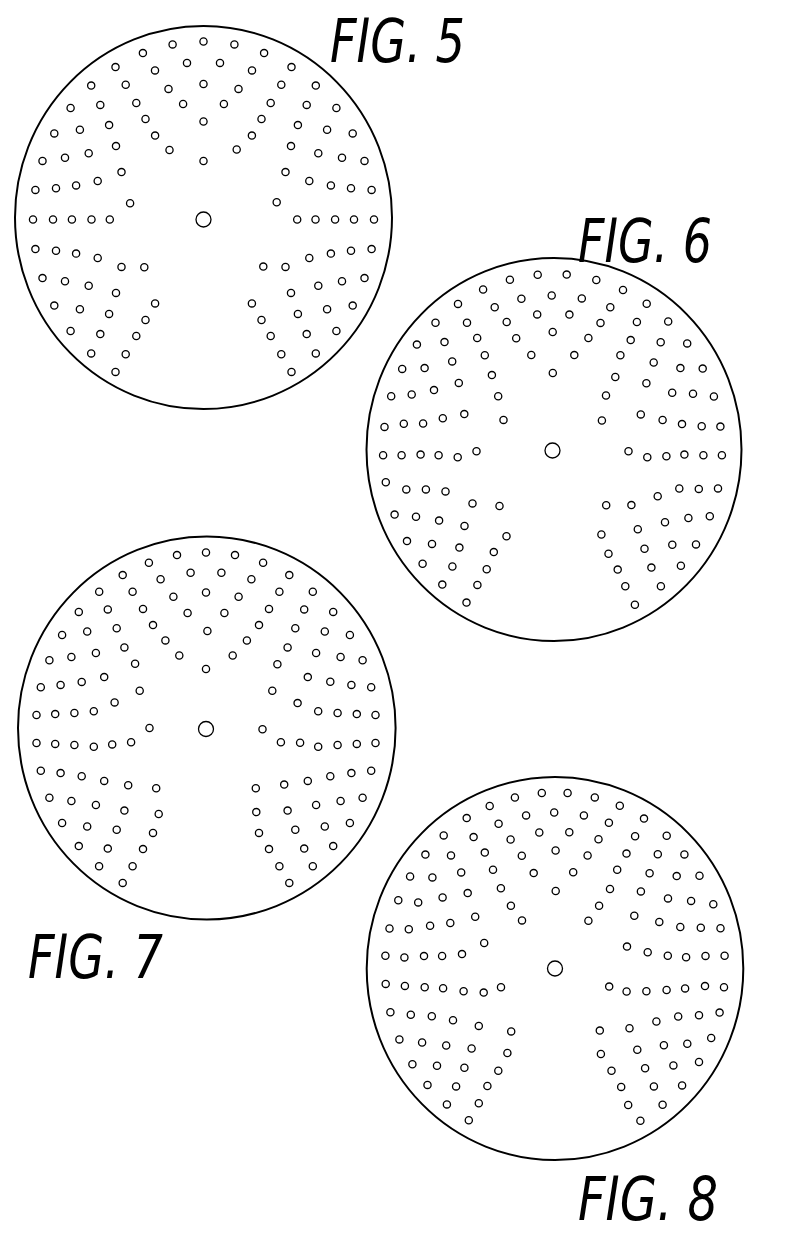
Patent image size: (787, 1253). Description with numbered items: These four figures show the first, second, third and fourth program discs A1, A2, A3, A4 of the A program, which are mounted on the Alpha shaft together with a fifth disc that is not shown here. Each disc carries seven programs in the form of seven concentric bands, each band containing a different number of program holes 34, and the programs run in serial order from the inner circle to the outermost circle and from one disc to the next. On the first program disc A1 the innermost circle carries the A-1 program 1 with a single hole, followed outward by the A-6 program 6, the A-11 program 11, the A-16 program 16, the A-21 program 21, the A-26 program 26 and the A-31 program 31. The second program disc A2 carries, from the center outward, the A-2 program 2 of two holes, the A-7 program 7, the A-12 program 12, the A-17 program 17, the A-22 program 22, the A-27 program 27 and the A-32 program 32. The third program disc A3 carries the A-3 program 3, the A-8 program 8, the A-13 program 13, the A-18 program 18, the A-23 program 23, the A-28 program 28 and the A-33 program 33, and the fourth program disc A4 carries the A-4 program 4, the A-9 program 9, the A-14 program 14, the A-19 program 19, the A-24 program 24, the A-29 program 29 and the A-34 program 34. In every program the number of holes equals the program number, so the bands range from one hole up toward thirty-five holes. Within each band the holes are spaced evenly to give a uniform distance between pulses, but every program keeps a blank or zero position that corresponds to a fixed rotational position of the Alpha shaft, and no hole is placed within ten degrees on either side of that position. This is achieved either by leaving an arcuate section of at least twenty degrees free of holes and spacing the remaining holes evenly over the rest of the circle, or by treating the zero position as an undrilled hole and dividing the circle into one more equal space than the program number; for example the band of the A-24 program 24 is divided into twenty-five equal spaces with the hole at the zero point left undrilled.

In FIG. 5, the first program disc A1 is at (220, 217).
In FIG. 6, the second program disc A2 is at (559, 449).
In FIG. 7, the third program disc A3 is at (205, 728).
In FIG. 8, the fourth program disc A4 is at (557, 968).
In FIG. 5, the A-1 program 1 is at (204, 221).
In FIG. 5, the A-6 program 6 is at (204, 226).
In FIG. 5, the A-11 program 11 is at (203, 222).
In FIG. 5, the A-16 program 16 is at (203, 223).
In FIG. 5, the A-21 program 21 is at (203, 222).
In FIG. 5, the A-26 program 26 is at (203, 221).
In FIG. 5, the A-31 program 31 is at (203, 222).
In FIG. 6, the A-2 program 2 is at (552, 466).
In FIG. 6, the A-7 program 7 is at (552, 453).
In FIG. 6, the A-12 program 12 is at (552, 454).
In FIG. 6, the A-17 program 17 is at (552, 452).
In FIG. 6, the A-22 program 22 is at (552, 454).
In FIG. 6, the A-27 program 27 is at (552, 454).
In FIG. 6, the A-32 program 32 is at (553, 452).
In FIG. 7, the A-3 program 3 is at (206, 729).
In FIG. 7, the A-8 program 8 is at (206, 733).
In FIG. 7, the A-13 program 13 is at (206, 731).
In FIG. 7, the A-18 program 18 is at (206, 731).
In FIG. 7, the A-23 program 23 is at (206, 731).
In FIG. 7, the A-28 program 28 is at (206, 730).
In FIG. 7, the A-33 program 33 is at (206, 730).
In FIG. 8, the A-4 program 4 is at (554, 977).
In FIG. 8, the A-9 program 9 is at (555, 971).
In FIG. 8, the A-14 program 14 is at (554, 972).
In FIG. 8, the A-19 program 19 is at (555, 971).
In FIG. 8, the A-24 program 24 is at (554, 972).
In FIG. 8, the A-29 program 29 is at (555, 971).
In FIG. 8, the program holes 34 is at (555, 970).